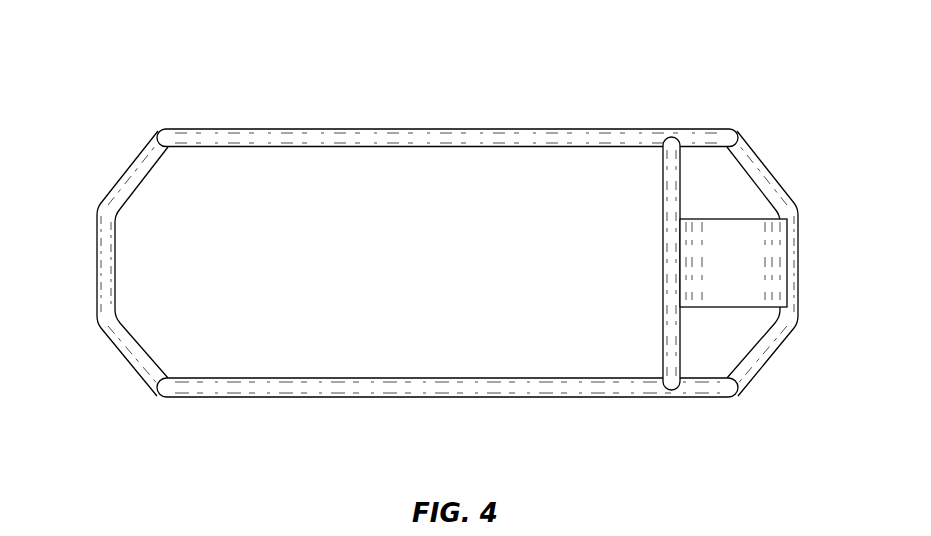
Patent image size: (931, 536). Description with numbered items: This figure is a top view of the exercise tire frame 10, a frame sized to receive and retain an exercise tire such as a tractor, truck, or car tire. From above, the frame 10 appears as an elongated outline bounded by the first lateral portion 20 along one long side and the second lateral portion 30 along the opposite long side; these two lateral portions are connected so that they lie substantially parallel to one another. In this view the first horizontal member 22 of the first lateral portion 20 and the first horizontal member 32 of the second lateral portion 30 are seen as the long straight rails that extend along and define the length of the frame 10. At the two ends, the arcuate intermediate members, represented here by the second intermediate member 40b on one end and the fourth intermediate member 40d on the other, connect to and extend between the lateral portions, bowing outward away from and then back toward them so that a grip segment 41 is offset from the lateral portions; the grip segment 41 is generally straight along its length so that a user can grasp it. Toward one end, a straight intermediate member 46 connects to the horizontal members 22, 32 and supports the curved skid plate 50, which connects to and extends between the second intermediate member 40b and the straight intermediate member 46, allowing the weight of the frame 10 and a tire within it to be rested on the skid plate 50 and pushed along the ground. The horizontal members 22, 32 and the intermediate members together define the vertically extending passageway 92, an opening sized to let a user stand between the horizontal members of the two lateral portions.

The exercise tire frame 10 is at (197, 58).
The first lateral portion 20 is at (606, 121).
The first horizontal member 22 is at (495, 128).
The second lateral portion 30 is at (310, 407).
The first horizontal member 32 is at (575, 399).
The second intermediate member 40b is at (767, 165).
The fourth intermediate member 40d is at (75, 229).
The grip segment 41 is at (116, 280).
The cross member 46 is at (662, 338).
The skid plate 50 is at (773, 258).
The vertically extending passageway 92 is at (415, 262).